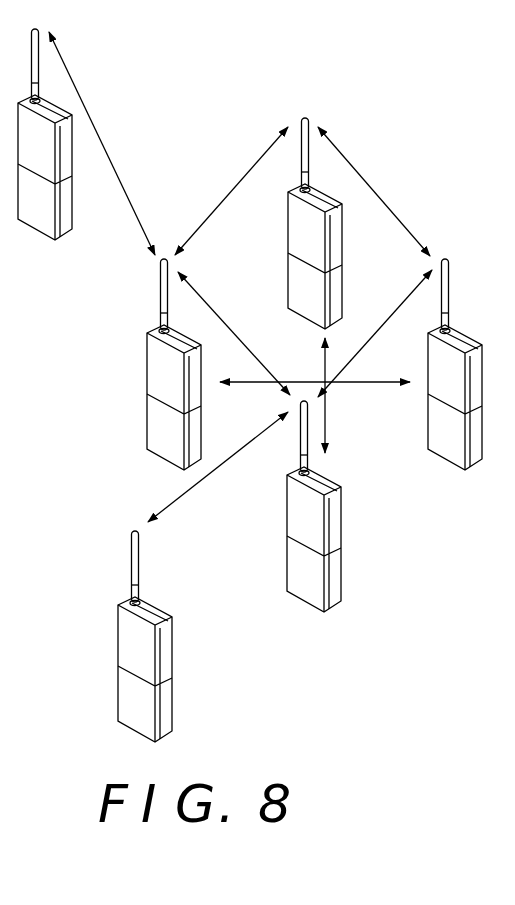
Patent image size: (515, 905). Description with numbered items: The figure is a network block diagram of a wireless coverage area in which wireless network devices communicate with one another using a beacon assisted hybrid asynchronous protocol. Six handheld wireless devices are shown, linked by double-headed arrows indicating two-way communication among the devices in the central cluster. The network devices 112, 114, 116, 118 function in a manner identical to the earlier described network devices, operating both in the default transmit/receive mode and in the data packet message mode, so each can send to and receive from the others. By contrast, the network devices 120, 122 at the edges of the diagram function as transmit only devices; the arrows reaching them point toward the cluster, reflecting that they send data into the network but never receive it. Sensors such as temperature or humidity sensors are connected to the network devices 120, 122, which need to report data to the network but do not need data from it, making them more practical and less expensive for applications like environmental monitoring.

The network device 112 is at (160, 428).
The network device 114 is at (297, 232).
The network device 116 is at (440, 425).
The network device 118 is at (297, 512).
The network device 120 is at (40, 222).
The network device 122 is at (132, 633).